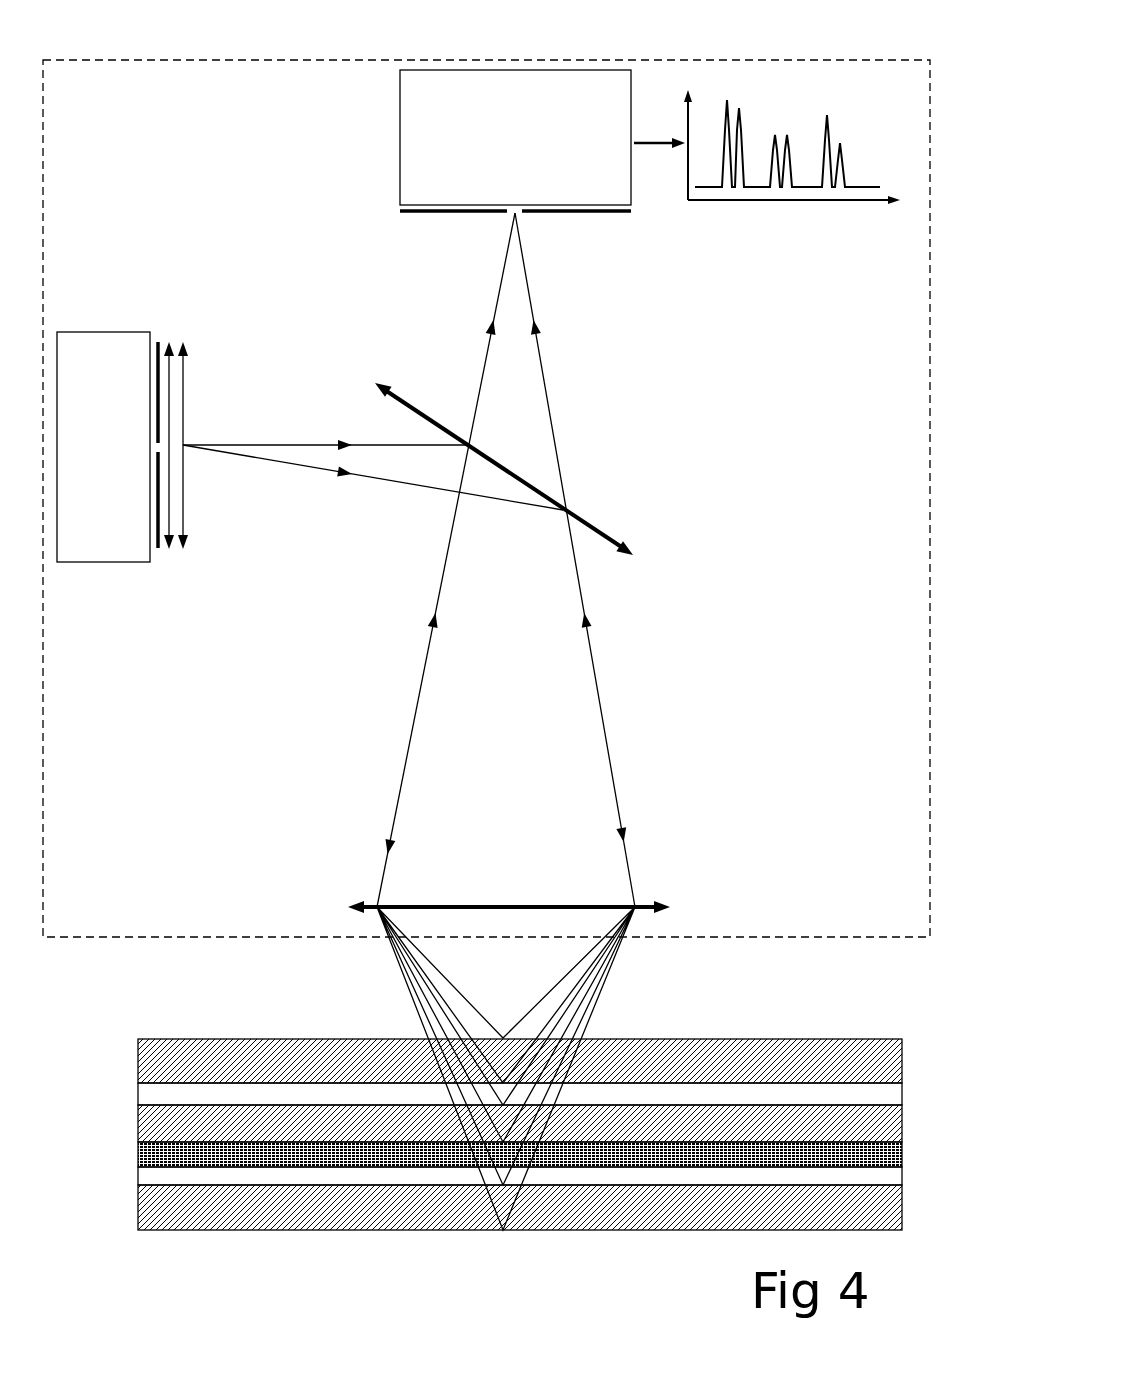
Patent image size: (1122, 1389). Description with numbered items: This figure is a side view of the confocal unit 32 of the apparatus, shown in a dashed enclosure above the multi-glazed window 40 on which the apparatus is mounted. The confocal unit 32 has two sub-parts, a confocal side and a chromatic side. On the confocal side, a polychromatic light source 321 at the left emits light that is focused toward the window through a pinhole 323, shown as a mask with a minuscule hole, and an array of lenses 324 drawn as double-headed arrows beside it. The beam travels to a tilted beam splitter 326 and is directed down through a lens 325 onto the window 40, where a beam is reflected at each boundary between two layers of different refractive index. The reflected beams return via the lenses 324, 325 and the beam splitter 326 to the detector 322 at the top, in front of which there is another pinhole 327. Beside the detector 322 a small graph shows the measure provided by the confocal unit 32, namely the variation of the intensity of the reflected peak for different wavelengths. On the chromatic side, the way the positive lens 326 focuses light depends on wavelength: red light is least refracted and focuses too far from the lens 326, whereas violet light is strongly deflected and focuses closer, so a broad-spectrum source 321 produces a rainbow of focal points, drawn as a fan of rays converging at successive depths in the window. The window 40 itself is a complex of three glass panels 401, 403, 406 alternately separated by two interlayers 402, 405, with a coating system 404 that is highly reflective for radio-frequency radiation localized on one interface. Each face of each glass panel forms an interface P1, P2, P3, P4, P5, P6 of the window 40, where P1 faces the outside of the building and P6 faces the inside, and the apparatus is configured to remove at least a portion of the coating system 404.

The confocal unit 32 is at (752, 62).
The polychromatic light source 321 is at (90, 375).
The detector 322 is at (425, 137).
The pinhole 323 is at (157, 345).
The array of lenses 324 is at (178, 378).
The lens 325 is at (585, 512).
The beam splitter 326 is at (655, 900).
The pinhole 327 is at (400, 207).
The multi-glazed window 40 is at (461, 1133).
The glass panel 401 is at (175, 1057).
The interlayer 402 is at (175, 1097).
The glass panel 403 is at (175, 1127).
The coating system 404 is at (175, 1157).
The interlayer 405 is at (175, 1181).
The glass panel 406 is at (493, 1207).
The interface P1 is at (921, 1042).
The interface P2 is at (921, 1074).
The interface P3 is at (921, 1105).
The interface P4 is at (921, 1137).
The interface P5 is at (921, 1185).
The interface P6 is at (921, 1227).